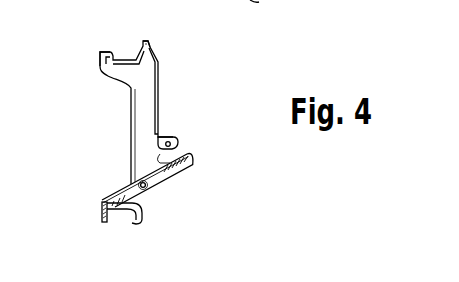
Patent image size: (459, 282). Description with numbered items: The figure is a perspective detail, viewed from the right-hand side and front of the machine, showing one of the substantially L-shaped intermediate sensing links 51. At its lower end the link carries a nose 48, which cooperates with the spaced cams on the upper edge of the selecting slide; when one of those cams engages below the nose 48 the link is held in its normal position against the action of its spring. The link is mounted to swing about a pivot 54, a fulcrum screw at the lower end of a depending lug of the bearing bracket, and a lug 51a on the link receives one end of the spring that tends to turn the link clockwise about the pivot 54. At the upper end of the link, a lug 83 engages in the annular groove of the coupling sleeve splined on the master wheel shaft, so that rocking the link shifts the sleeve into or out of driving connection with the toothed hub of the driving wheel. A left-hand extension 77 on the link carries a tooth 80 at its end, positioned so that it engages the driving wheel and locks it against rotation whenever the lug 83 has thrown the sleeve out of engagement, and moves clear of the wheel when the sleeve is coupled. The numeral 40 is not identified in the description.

The carriage 40 is at (276, 10).
The nose 48 is at (132, 222).
The intermediate sensing link 51 is at (146, 104).
The lug 51a is at (174, 138).
The pivot 54 is at (168, 179).
The left-hand extension 77 is at (122, 68).
The tooth 80 is at (100, 62).
The lug 83 is at (146, 43).